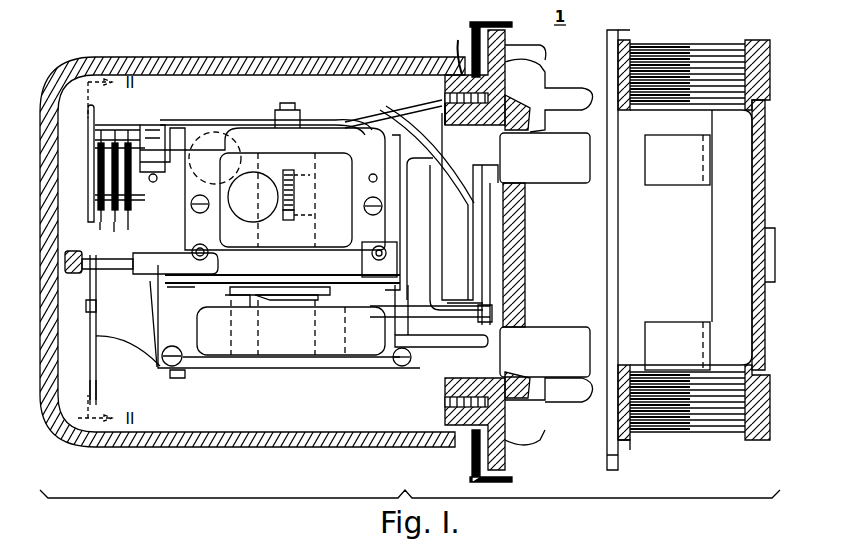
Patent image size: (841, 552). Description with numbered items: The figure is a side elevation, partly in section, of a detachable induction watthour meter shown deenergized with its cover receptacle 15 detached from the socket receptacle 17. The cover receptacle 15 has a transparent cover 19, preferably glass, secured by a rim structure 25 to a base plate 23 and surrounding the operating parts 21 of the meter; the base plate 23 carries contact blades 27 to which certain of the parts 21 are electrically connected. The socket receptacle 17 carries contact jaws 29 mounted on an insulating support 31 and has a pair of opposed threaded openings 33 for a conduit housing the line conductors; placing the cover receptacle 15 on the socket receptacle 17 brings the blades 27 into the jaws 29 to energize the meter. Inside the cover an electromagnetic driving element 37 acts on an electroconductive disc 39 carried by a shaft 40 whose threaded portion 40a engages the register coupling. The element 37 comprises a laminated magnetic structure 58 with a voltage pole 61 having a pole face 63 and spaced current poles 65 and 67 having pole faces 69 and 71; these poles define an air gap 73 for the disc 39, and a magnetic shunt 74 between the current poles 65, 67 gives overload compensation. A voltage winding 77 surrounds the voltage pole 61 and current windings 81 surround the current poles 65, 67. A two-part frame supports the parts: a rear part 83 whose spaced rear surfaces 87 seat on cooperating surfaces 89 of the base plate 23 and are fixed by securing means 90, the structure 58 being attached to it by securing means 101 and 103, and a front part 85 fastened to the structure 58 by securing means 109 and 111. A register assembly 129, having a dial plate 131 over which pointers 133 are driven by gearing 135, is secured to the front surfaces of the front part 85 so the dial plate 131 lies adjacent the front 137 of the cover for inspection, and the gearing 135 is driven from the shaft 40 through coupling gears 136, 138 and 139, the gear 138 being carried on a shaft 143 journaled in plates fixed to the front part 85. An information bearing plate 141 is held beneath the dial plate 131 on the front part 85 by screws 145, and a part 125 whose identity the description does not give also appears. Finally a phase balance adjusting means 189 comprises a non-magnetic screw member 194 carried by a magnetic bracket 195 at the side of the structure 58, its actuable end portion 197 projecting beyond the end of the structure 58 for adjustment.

The cover receptacle 15 is at (212, 48).
The socket receptacle 17 is at (696, 31).
The cover 19 is at (284, 62).
The operating parts 21 is at (227, 95).
The base plate 23 is at (470, 110).
The rim structure 25 is at (492, 22).
The contact blades 27 is at (556, 178).
The contact jaws 29 is at (678, 180).
The insulating support 31 is at (712, 236).
The threaded openings 33 is at (732, 44).
The electromagnetic driving element 37 is at (255, 380).
The disc 39 is at (396, 255).
The shaft 40 is at (312, 215).
The threaded portion 40a is at (310, 175).
The magnetic structure 58 is at (330, 120).
The voltage pole 61 is at (318, 195).
The pole face 63 is at (272, 276).
The current magnetic pole 65 is at (230, 328).
The current magnetic pole 67 is at (346, 327).
The pole face 69 is at (236, 300).
The pole face 71 is at (330, 300).
The air gap 73 is at (318, 280).
The magnetic shunt 74 is at (280, 300).
The voltage winding 77 is at (358, 172).
The current windings 81 is at (200, 368).
The rear part 83 is at (440, 96).
The front part 85 is at (178, 128).
The rear surfaces 87 is at (452, 392).
The cooperating surfaces 89 is at (458, 72).
The securing means 90 is at (508, 70).
The securing means 101 is at (375, 215).
The securing means 103 is at (404, 367).
The securing means 109 is at (200, 213).
The securing means 111 is at (166, 366).
The connector 125 is at (298, 103).
The register assembly 129 is at (115, 114).
The dial plate 131 is at (88, 112).
The pointers 133 is at (96, 178).
The gearing 135 is at (128, 230).
The coupling gear 136 is at (147, 125).
The front of the cover 137 is at (48, 112).
The coupling gear 138 is at (230, 132).
The coupling gear 139 is at (265, 220).
The information bearing plate 141 is at (98, 368).
The shaft 143 is at (138, 345).
The screws 145 is at (88, 307).
The adjusting means 189 is at (90, 283).
The non-magnetic screw member 194 is at (160, 268).
The magnetic bracket 195 is at (138, 270).
The actuable end portion 197 is at (75, 251).